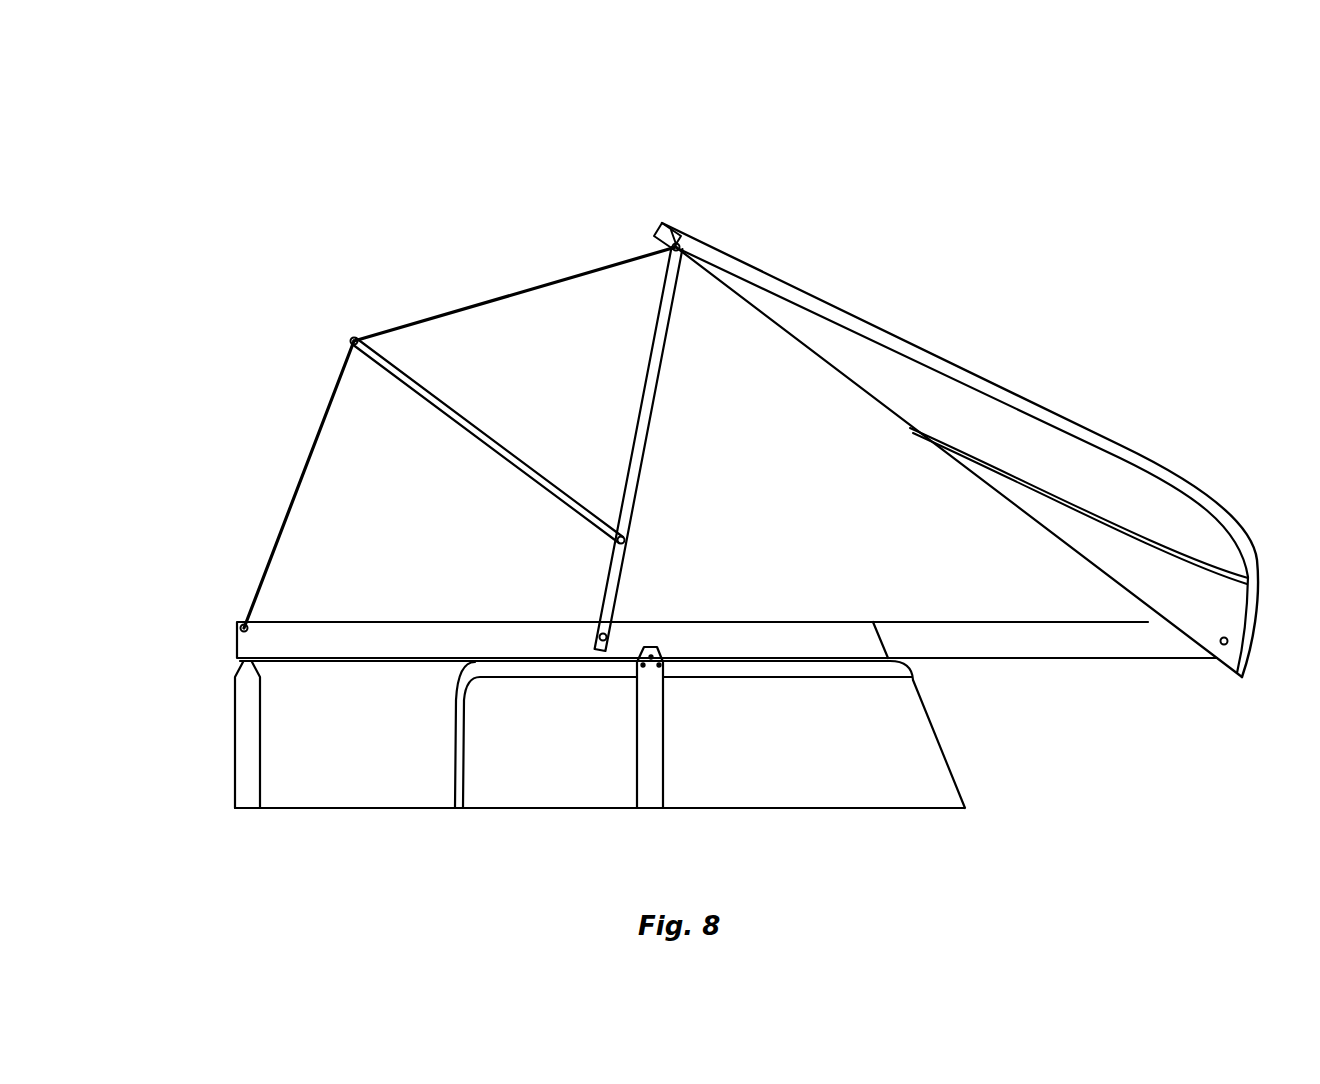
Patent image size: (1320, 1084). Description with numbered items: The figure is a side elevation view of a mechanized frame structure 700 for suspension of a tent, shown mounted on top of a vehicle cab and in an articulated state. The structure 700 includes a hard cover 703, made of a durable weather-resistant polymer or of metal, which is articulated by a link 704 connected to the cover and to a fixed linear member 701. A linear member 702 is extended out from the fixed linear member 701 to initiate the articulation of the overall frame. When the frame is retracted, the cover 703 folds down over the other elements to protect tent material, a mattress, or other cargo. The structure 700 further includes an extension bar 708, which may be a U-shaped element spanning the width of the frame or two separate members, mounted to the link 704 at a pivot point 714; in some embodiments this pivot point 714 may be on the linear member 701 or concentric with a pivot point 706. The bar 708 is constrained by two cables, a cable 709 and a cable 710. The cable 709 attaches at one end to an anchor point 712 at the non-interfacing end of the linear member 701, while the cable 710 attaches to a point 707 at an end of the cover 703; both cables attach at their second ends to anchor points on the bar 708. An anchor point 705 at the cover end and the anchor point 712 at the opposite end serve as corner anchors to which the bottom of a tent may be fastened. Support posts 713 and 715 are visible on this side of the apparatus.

The mechanized frame structure 700 is at (583, 173).
The fixed linear member 701 is at (470, 620).
The linear member 702 is at (992, 660).
The hard cover 703 is at (1015, 389).
The link 704 is at (667, 337).
The anchor point 705 is at (1225, 633).
The pivot point 706 is at (597, 637).
The attachment point 707 is at (678, 233).
The extension bar 708 is at (395, 382).
The cable 709 is at (287, 520).
The cable 710 is at (496, 299).
The anchor point 712 is at (237, 628).
The support post 713 is at (260, 752).
The pivot point 714 is at (630, 540).
The support post 715 is at (663, 757).